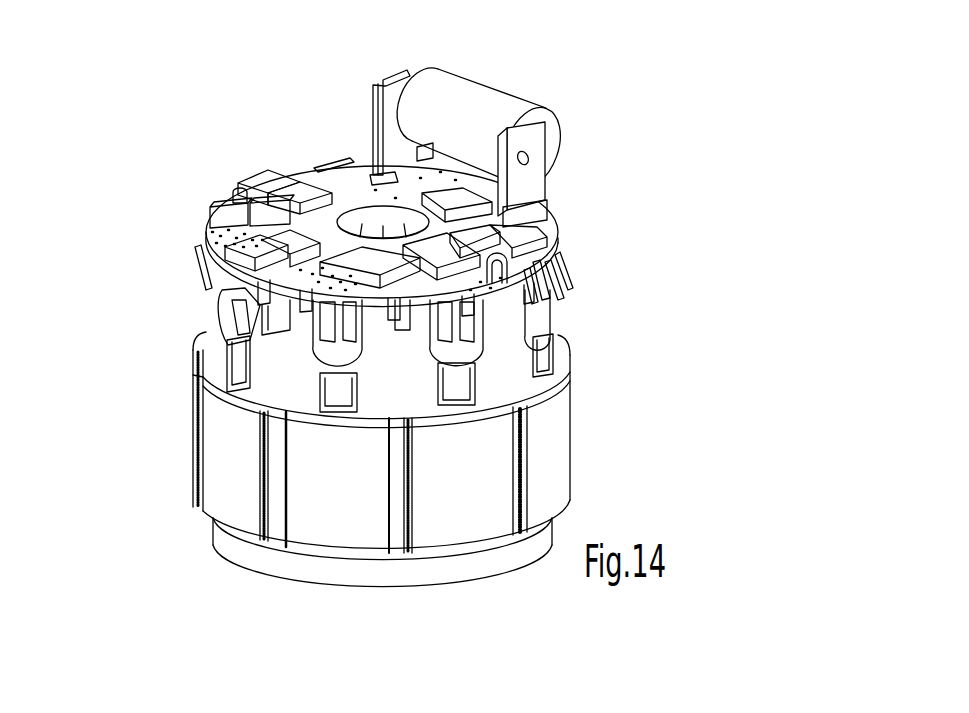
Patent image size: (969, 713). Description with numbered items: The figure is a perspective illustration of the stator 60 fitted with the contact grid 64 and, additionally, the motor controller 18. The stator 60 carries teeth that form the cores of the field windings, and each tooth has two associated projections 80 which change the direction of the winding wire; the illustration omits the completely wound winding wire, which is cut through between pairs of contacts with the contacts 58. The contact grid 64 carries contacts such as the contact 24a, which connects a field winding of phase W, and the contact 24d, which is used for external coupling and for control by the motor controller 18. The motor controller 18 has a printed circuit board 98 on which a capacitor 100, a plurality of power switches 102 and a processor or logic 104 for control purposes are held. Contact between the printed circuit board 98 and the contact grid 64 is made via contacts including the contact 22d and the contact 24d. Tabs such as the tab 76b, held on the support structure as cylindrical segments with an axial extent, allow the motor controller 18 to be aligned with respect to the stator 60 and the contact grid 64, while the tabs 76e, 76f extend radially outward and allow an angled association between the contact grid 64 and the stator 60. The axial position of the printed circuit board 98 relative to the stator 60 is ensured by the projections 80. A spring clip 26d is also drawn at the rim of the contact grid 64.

The motor controller 18 is at (312, 115).
The contact 24a is at (93, 263).
The tab 76b is at (358, 232).
The contact 22d is at (236, 193).
The power switch 102 is at (268, 182).
The capacitor 100 is at (503, 105).
The processor or logic 104 is at (512, 202).
The contact grid 64 is at (580, 243).
The contact 24d is at (218, 214).
The tab 76f is at (202, 253).
The contact 58 is at (247, 327).
The printed circuit board 98 is at (558, 290).
The spring clip 26d is at (560, 313).
The projection 80 is at (305, 307).
The stator 60 is at (217, 445).
The tab 76e is at (395, 305).